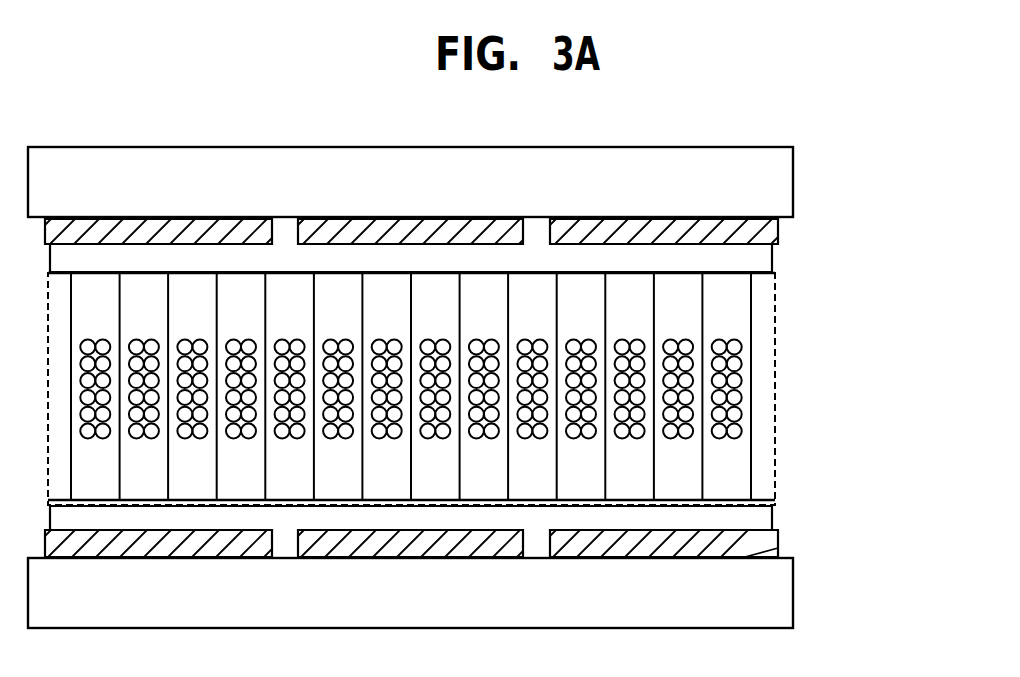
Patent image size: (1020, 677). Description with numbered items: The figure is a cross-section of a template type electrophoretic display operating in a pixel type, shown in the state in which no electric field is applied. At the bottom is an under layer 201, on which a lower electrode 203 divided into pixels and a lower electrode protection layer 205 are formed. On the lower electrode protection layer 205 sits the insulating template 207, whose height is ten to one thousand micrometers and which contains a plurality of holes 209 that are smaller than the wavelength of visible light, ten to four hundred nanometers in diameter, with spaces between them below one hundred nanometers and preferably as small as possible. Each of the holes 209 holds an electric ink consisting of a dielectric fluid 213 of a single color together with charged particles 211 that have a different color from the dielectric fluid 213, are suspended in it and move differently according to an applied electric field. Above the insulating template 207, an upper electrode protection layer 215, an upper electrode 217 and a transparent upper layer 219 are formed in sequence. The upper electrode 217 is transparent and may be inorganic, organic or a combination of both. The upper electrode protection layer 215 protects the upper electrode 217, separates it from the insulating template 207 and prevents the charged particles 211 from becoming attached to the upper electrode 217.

The under layer 201 is at (780, 594).
The lower electrode 203 is at (775, 550).
The lower electrode protection layer 205 is at (770, 515).
The insulating template 207 is at (777, 460).
The holes 209 is at (752, 392).
The charged particles 211 is at (737, 366).
The dielectric fluid 213 is at (743, 309).
The upper electrode protection layer 215 is at (766, 262).
The upper electrode 217 is at (778, 230).
The transparent upper layer 219 is at (777, 182).